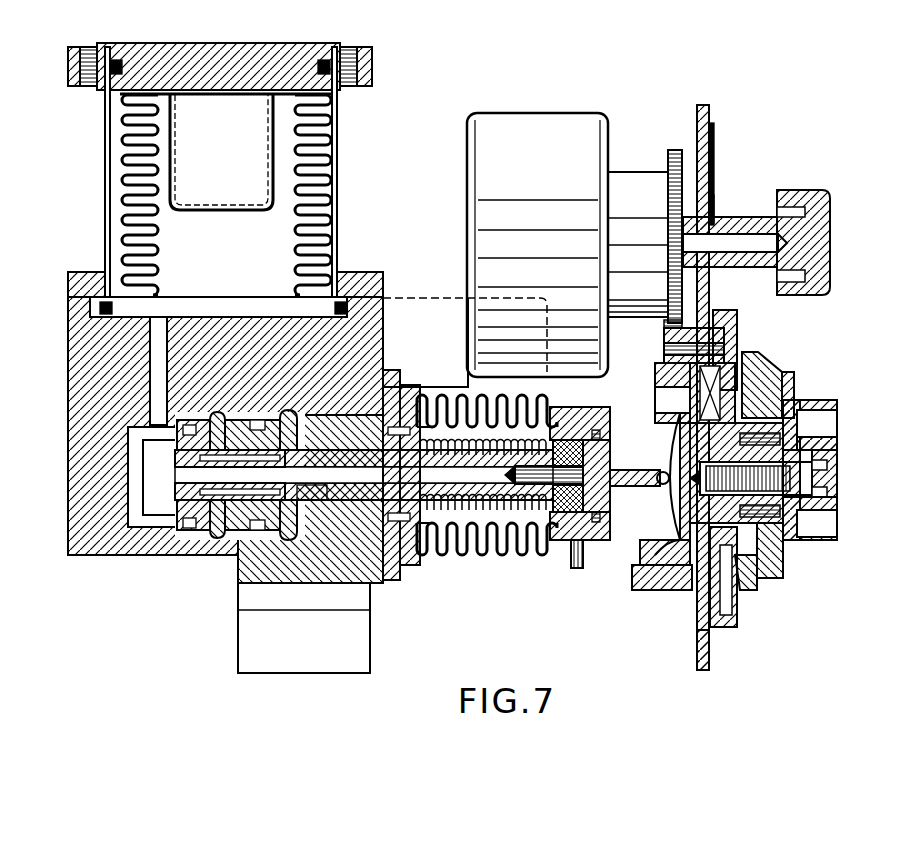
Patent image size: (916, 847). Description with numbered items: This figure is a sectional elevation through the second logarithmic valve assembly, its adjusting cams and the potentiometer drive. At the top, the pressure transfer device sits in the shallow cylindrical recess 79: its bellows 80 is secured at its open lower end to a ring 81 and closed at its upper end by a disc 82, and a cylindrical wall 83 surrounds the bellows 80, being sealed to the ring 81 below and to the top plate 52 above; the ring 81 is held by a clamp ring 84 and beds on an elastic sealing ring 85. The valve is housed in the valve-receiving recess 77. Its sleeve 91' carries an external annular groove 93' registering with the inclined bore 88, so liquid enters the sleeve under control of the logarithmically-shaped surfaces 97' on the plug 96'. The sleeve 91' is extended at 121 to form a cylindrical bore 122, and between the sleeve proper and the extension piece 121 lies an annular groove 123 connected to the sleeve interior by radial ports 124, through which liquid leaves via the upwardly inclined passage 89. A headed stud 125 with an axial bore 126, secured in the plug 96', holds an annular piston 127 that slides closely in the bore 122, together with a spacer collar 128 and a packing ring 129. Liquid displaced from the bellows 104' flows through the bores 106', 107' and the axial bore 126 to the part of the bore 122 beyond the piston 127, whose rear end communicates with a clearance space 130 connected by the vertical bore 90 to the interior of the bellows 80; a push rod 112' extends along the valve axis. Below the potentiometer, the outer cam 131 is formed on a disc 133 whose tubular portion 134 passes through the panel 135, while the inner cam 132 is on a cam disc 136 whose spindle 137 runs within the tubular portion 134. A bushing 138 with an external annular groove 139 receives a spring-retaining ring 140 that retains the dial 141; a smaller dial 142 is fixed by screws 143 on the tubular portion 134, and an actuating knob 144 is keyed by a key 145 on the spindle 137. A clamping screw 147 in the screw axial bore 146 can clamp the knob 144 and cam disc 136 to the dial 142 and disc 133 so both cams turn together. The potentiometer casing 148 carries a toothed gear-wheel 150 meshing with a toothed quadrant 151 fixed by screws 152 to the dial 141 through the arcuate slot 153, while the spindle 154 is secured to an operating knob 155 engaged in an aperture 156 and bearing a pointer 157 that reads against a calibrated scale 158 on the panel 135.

The top plate 52 is at (245, 43).
The valve-receiving recess 77 is at (128, 530).
The shallow cylindrical recess 79 is at (110, 313).
The bellows 80 is at (290, 240).
The ring 81 is at (88, 275).
The disc 82 is at (174, 168).
The cylindrical wall 83 is at (337, 210).
The clamp ring 84 is at (370, 274).
The elastic sealing ring 85 is at (383, 322).
The inclined bore 88 is at (383, 345).
The upwardly inclined passage 89 is at (222, 418).
The vertical bore 90 is at (68, 380).
The sleeve 91' is at (364, 538).
The external annular groove 93' is at (408, 462).
The plug 96' is at (419, 529).
The logarithmically-shaped surfaces 97' is at (300, 547).
The bellows 104' is at (557, 471).
The bore 106' is at (487, 490).
The bore 107' is at (483, 513).
The push rod 112' is at (639, 488).
The extension piece 121 is at (172, 525).
The cylindrical bore 122 is at (150, 490).
The annular groove 123 is at (217, 525).
The radial ports 124 is at (177, 440).
The headed stud 125 is at (200, 458).
The axial bore 126 is at (175, 474).
The annular piston 127 is at (190, 525).
The spacer collar 128 is at (288, 530).
The packing ring 129 is at (235, 525).
The clearance space 130 is at (140, 512).
The outer cam 131 is at (640, 584).
The inner cam 132 is at (660, 547).
The disc 133 is at (680, 575).
The tubular portion 134 is at (737, 590).
The panel 135 is at (697, 650).
The cam disc 136 is at (690, 430).
The spindle 137 is at (835, 425).
The bushing 138 is at (785, 553).
The external annular groove 139 is at (790, 380).
The spring-retaining ring 140 is at (765, 380).
The dial 141 is at (737, 325).
The dial 142 is at (775, 578).
The screws 143 is at (805, 425).
The actuating knob 144 is at (837, 443).
The key 145 is at (820, 430).
The screw axial bore 146 is at (837, 492).
The clamping screw 147 is at (828, 468).
The casing 148 is at (541, 180).
The toothed gear-wheel 150 is at (672, 150).
The toothed quadrant 151 is at (668, 338).
The screws 152 is at (668, 352).
The arcuate slot 153 is at (664, 326).
The spindle 154 is at (760, 240).
The operating knob 155 is at (830, 228).
The aperture 156 is at (715, 212).
The pointer 157 is at (715, 195).
The calibrated scale 158 is at (712, 137).